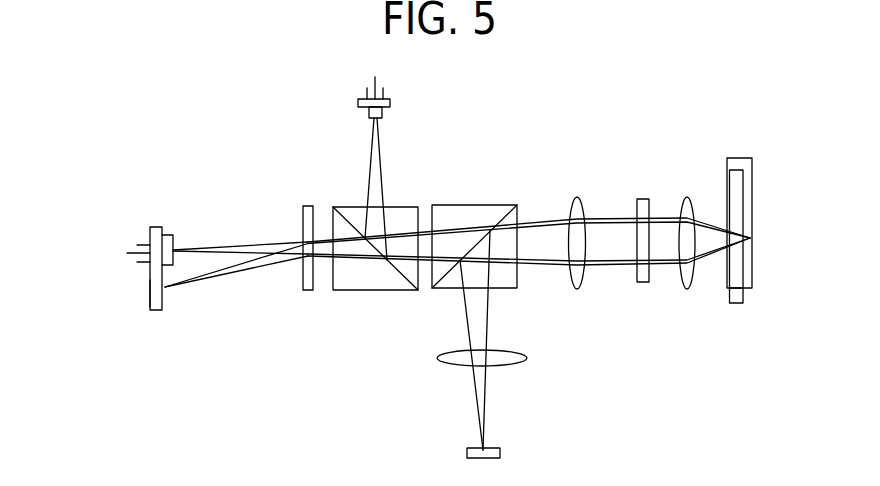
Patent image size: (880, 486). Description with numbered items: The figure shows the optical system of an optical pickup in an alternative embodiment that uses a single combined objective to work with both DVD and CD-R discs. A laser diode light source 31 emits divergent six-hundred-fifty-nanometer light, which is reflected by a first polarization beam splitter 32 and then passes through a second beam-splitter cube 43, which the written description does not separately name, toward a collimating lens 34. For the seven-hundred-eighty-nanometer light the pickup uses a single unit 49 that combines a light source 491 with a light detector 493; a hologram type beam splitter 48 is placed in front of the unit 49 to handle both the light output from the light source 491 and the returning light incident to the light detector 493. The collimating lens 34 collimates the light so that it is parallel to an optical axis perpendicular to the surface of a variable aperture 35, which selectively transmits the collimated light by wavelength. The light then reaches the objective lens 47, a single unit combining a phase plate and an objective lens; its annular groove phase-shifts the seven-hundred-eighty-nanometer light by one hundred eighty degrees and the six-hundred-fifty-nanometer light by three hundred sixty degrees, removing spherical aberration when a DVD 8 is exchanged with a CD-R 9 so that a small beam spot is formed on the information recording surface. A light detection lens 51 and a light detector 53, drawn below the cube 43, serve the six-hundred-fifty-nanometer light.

The DVD 8 is at (742, 297).
The CD-R 9 is at (752, 180).
The laser diode light source 31 is at (390, 102).
The first polarization beam splitter 32 is at (358, 292).
The collimating lens 34 is at (577, 197).
The variable aperture 35 is at (645, 199).
The second beam splitter 43 is at (480, 206).
The objective lens 47 is at (687, 197).
The hologram type beam splitter 48 is at (300, 273).
The single unit 49 is at (159, 227).
The light source 491 is at (125, 227).
The light detector 493 is at (125, 280).
The light detection lens 51 is at (435, 360).
The light detector 53 is at (467, 453).